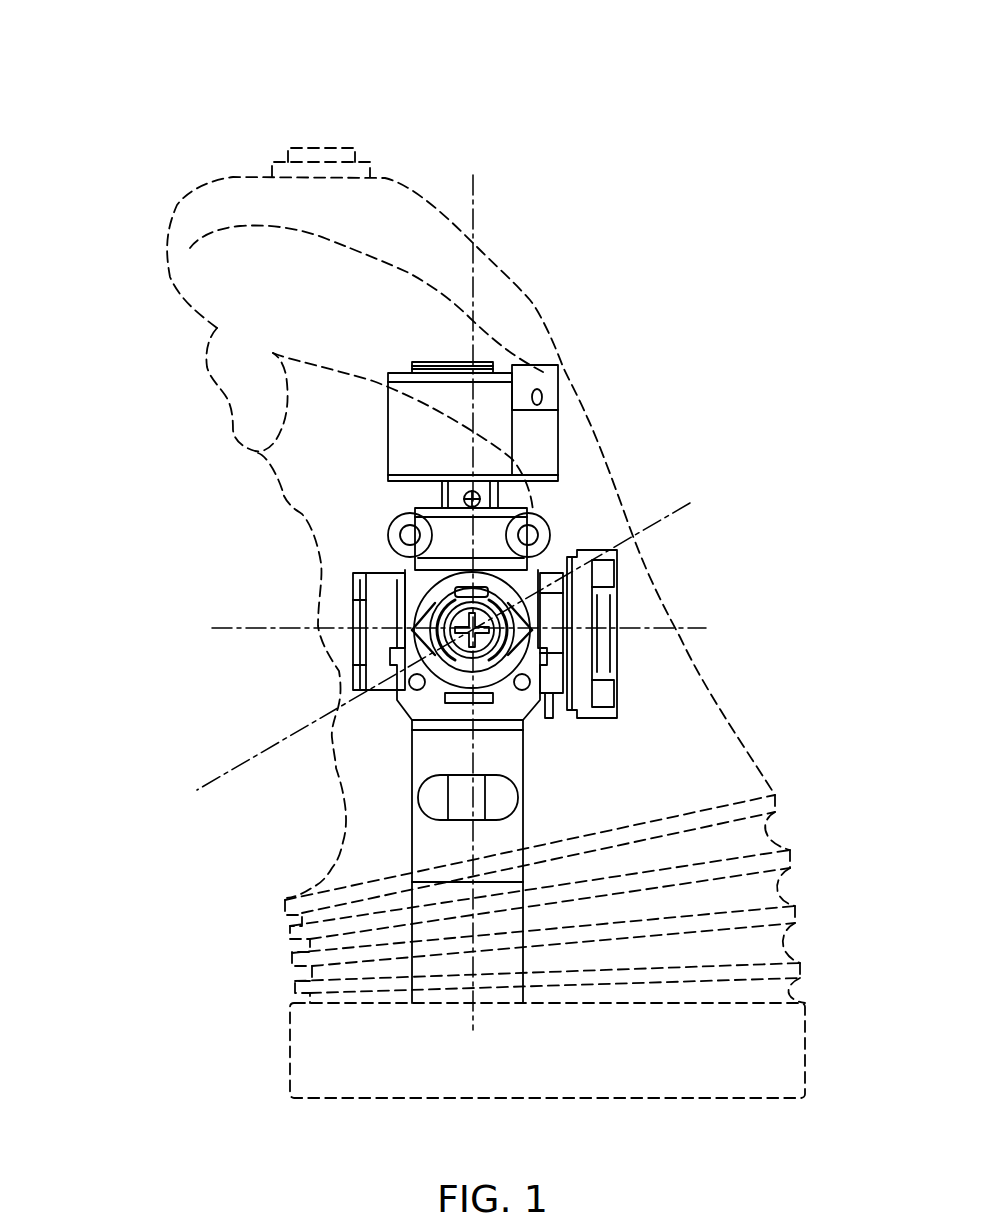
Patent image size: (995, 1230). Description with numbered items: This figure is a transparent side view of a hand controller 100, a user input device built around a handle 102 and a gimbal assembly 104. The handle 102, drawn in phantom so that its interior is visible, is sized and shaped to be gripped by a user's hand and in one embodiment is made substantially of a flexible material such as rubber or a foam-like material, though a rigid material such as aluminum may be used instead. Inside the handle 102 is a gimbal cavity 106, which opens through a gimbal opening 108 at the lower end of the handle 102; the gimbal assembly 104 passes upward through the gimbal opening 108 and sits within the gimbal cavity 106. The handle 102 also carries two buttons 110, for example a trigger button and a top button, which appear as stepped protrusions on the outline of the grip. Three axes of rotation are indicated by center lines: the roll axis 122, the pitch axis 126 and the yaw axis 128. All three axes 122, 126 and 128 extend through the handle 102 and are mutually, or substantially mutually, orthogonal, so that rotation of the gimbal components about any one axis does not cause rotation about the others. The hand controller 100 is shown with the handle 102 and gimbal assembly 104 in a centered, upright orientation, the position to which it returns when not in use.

The hand controller 100 is at (426, 597).
The handle 102 is at (232, 192).
The gimbal assembly 104 is at (531, 546).
The gimbal cavity 106 is at (632, 787).
The gimbal opening 108 is at (545, 982).
The buttons 110 is at (339, 148).
The roll axis 122 is at (706, 628).
The pitch axis 126 is at (266, 752).
The yaw axis 128 is at (476, 200).